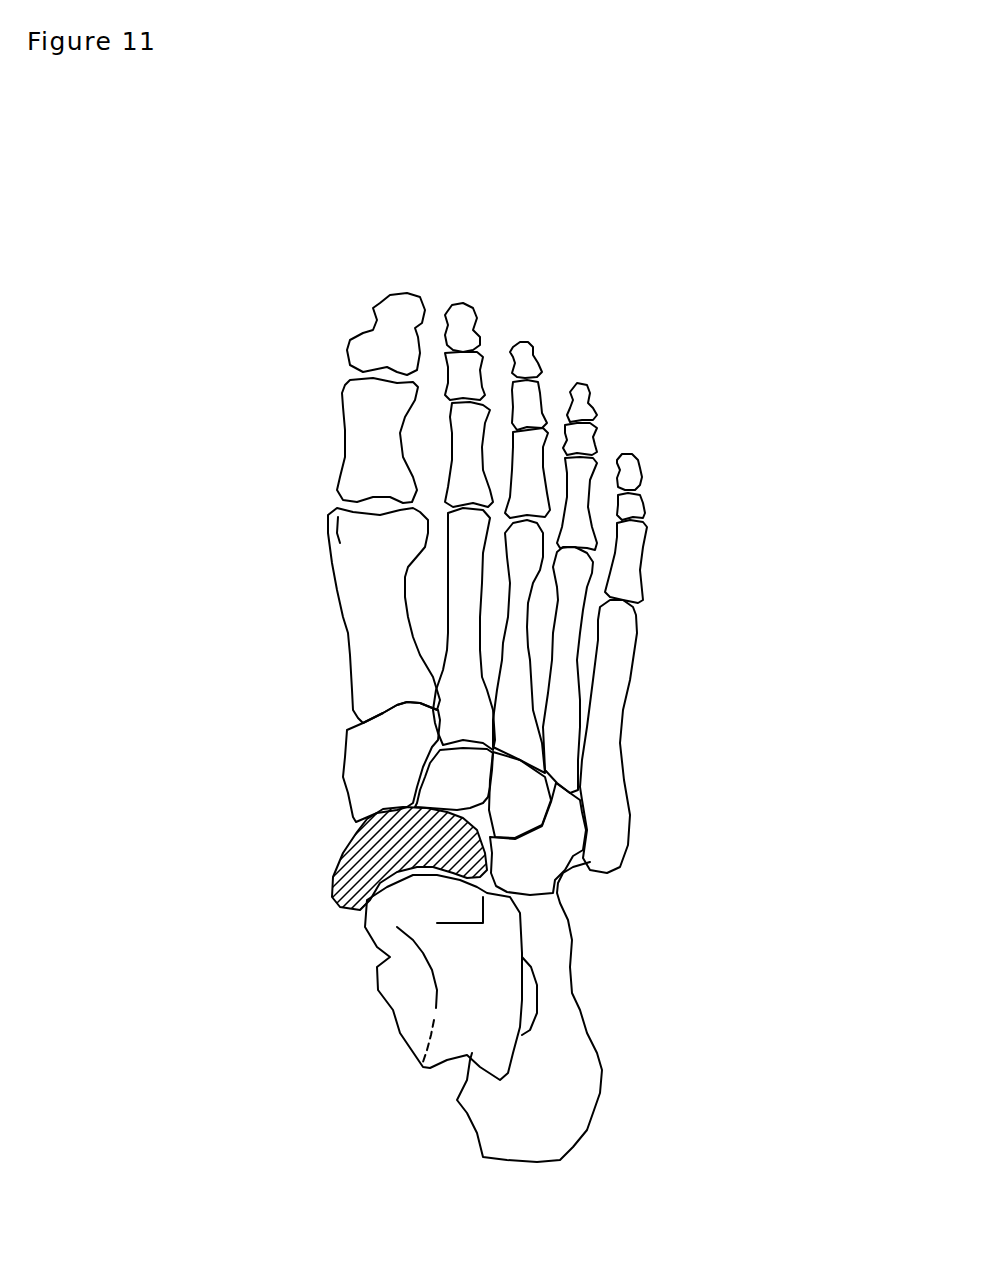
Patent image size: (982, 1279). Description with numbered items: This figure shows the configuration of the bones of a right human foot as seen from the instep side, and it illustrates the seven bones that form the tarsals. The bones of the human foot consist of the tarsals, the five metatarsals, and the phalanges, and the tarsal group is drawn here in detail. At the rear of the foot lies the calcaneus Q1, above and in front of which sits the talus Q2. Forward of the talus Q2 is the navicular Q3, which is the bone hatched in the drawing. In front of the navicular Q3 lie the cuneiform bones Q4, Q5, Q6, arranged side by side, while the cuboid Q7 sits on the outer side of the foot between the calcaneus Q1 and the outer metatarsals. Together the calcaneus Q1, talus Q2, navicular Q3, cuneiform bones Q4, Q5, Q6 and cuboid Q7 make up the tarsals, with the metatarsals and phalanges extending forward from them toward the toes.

The calcaneus Q1 is at (567, 1110).
The talus Q2 is at (420, 1037).
The navicular Q3 is at (350, 845).
The cuneiform bone Q4 is at (438, 788).
The cuneiform bone Q5 is at (380, 752).
The cuneiform bone Q6 is at (513, 803).
The cuboid Q7 is at (555, 860).